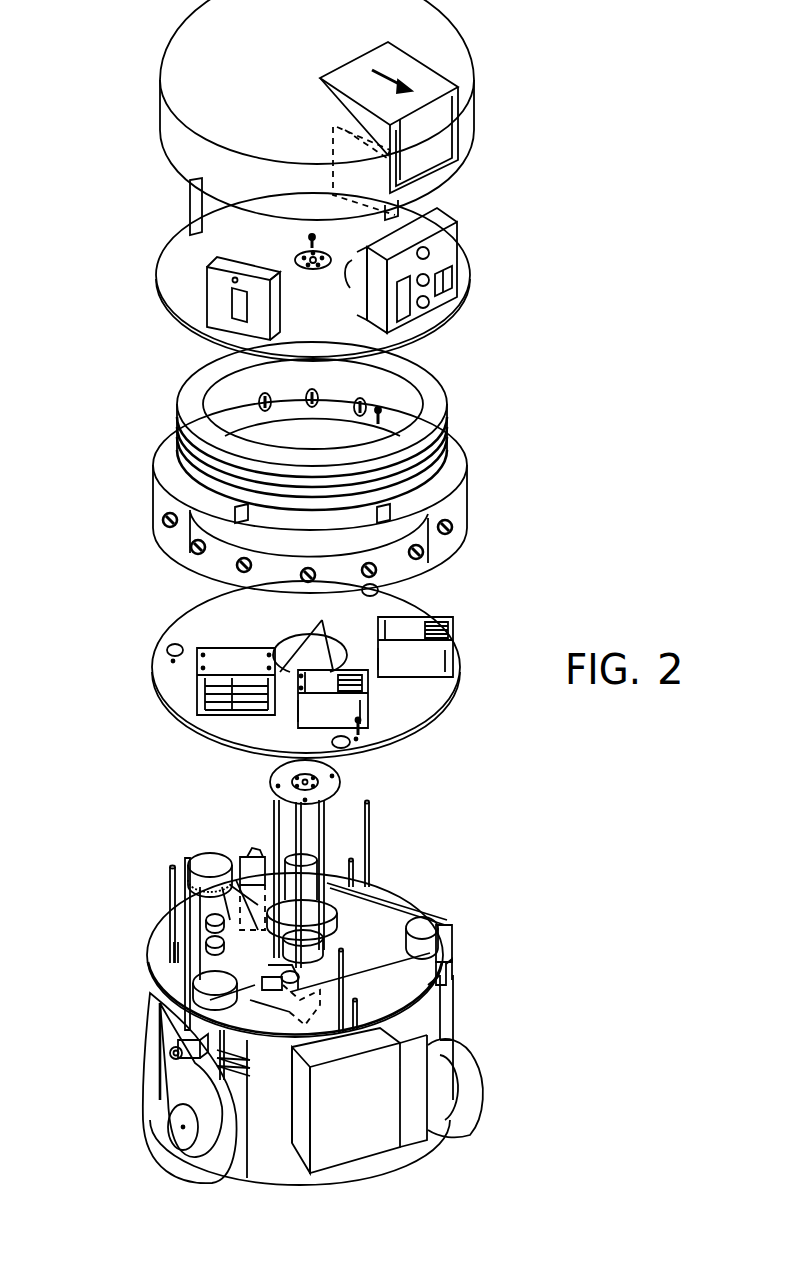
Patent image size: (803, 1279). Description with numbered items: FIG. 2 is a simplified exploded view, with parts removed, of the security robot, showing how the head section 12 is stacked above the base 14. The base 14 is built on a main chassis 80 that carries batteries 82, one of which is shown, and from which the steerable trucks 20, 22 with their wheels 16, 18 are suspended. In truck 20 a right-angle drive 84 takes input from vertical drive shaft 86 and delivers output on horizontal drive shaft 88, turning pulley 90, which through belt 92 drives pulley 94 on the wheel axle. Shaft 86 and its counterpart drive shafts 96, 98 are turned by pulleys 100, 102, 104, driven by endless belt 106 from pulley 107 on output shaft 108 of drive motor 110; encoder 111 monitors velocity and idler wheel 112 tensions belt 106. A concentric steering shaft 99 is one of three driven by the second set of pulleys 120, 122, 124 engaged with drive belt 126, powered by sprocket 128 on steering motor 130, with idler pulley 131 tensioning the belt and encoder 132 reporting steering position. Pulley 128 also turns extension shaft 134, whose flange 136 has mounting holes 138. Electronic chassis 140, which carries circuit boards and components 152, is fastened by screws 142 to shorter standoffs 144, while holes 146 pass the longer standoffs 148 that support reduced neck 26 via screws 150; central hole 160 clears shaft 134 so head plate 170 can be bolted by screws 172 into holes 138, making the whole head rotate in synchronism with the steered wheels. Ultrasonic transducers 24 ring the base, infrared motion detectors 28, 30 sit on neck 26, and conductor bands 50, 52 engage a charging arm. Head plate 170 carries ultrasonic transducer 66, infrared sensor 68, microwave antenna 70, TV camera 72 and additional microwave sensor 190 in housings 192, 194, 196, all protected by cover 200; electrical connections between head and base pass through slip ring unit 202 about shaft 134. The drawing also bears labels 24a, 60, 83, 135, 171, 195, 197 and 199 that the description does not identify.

The head section 12 is at (500, 173).
The base 14 is at (540, 855).
The wheel 16 is at (175, 1164).
The wheel 18 is at (475, 1097).
The steerable truck 20 is at (160, 1090).
The steerable truck 22 is at (458, 1029).
The ultrasonic transducers 24 is at (358, 402).
The screw 24a is at (197, 549).
The reduced neck 26 is at (560, 375).
The passive infrared motion detector 28 is at (230, 515).
The passive infrared motion detector 30 is at (396, 512).
The conductor band 50 is at (458, 446).
The conductor band 52 is at (447, 420).
The electronics box 60 is at (430, 245).
The ultrasonic transducer 66 is at (422, 271).
The infrared sensor 68 is at (457, 282).
The microwave transmission and reception antenna 70 is at (397, 310).
The TV camera 72 is at (430, 302).
The main chassis 80 is at (240, 1018).
The battery 82 is at (375, 1135).
The arrow 83 is at (200, 838).
The right-angle drive 84 is at (218, 1058).
The vertical drive shaft 86 is at (205, 984).
The horizontal drive shaft 88 is at (222, 1077).
The pulley 90 is at (175, 1057).
The belt 92 is at (170, 1100).
The pulley 94 is at (197, 1130).
The drive shaft 96 is at (182, 854).
The drive shaft 98 is at (440, 925).
The steering shaft 99 is at (450, 975).
The sprocket or pulley 100 is at (188, 988).
The sprocket or pulley 102 is at (207, 860).
The sprocket or pulley 104 is at (440, 928).
The endless belt 106 is at (379, 892).
The pulley 107 is at (290, 838).
The output shaft 108 is at (256, 856).
The drive motor 110 is at (188, 880).
The encoder 111 is at (237, 920).
The idler wheel 112 is at (186, 906).
The pulley or sprocket 120 is at (250, 1007).
The pulley or sprocket 122 is at (236, 883).
The pulley or sprocket 124 is at (460, 958).
The drive belt 126 is at (435, 895).
The sprocket 128 is at (395, 945).
The steering motor 130 is at (296, 1003).
The idler pulley 131 is at (268, 972).
The encoder 132 is at (300, 1022).
The extension shaft 134 is at (297, 813).
The cable 135 is at (260, 960).
The flange 136 is at (290, 778).
The mounting holes 138 is at (340, 775).
The electronic chassis 140 is at (445, 612).
The screws 142 is at (373, 724).
The shorter standoffs 144 is at (362, 860).
The holes 146 is at (167, 649).
The longer standoffs 148 is at (369, 816).
The screws 150 is at (387, 412).
The electronic circuit boards and components 152 is at (313, 626).
The central hole 160 is at (285, 648).
The head plate 170 is at (177, 260).
The recess 171 is at (384, 66).
The screws 172 is at (306, 240).
The microwave sensor 190 is at (215, 305).
The housing 192 is at (277, 296).
The housing 194 is at (190, 208).
The slot 195 is at (235, 280).
The housing 196 is at (318, 142).
The pin 197 is at (333, 235).
The clip 199 is at (438, 212).
The cover 200 is at (185, 65).
The slip ring unit 202 is at (335, 866).